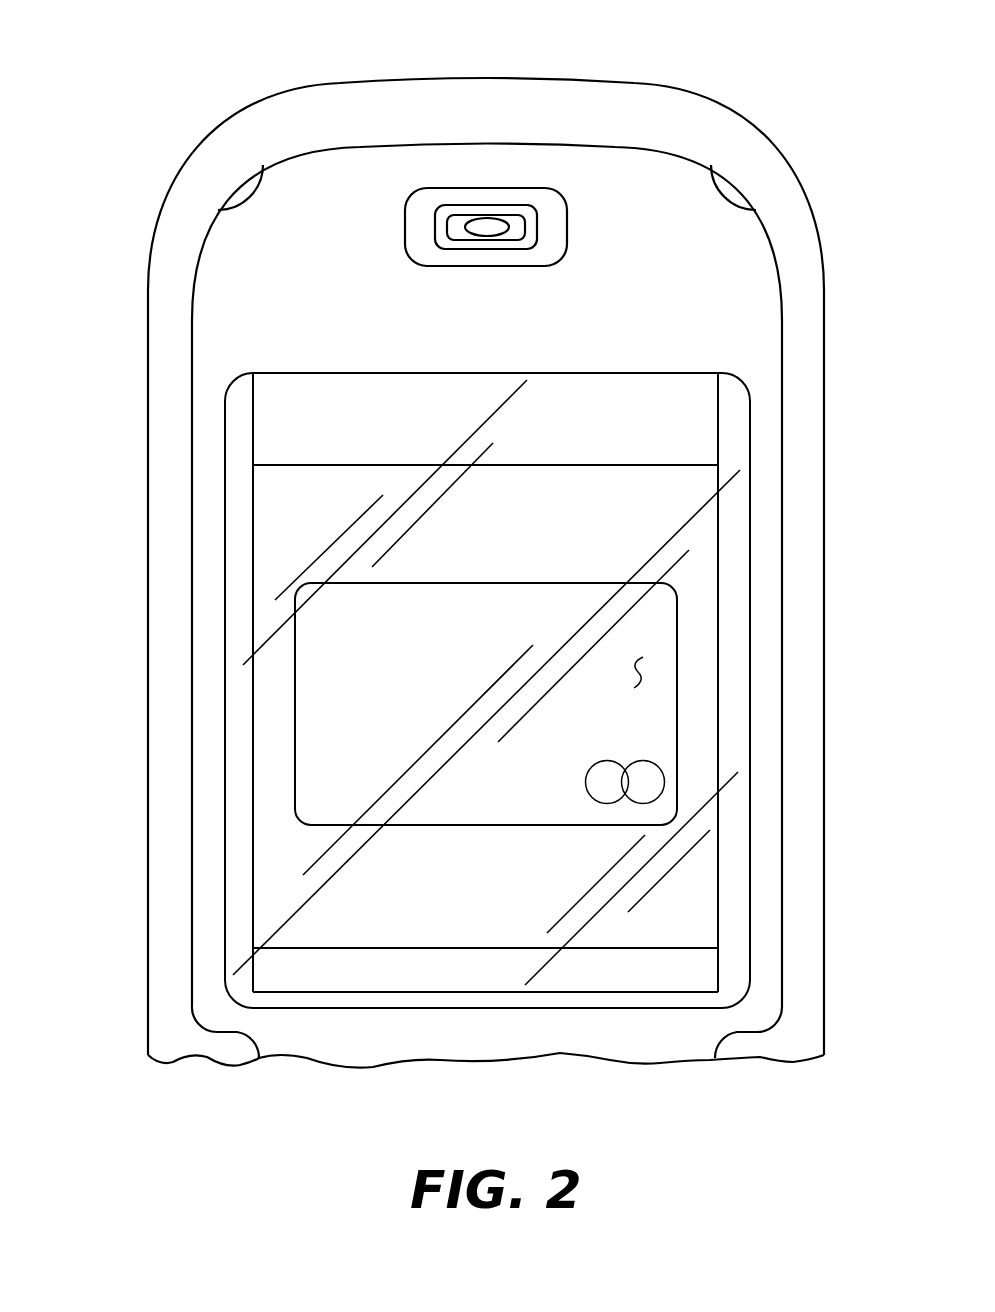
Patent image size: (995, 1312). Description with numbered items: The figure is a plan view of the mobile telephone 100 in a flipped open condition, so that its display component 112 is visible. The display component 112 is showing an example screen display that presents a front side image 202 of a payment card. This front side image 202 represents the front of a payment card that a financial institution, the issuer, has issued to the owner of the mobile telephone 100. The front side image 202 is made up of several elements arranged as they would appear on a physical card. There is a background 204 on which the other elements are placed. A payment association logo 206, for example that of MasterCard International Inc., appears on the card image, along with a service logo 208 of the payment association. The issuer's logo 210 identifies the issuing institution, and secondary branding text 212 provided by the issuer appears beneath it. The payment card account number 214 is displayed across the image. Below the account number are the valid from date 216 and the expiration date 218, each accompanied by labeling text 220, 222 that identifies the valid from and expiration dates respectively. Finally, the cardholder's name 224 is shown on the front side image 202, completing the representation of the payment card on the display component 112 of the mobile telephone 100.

The mobile telephone 100 is at (826, 68).
The display component 112 is at (663, 512).
The front side image 202 is at (463, 580).
The background 204 is at (640, 670).
The payment association logo 206 is at (672, 787).
The service logo 208 is at (674, 614).
The issuer's logo 210 is at (301, 611).
The secondary branding text 212 is at (328, 643).
The payment card account number 214 is at (378, 672).
The valid from date 216 is at (352, 776).
The expiration date 218 is at (587, 745).
The labeling text for valid from date 220 is at (294, 747).
The labeling text for expiration date 222 is at (484, 776).
The cardholder's name 224 is at (412, 818).